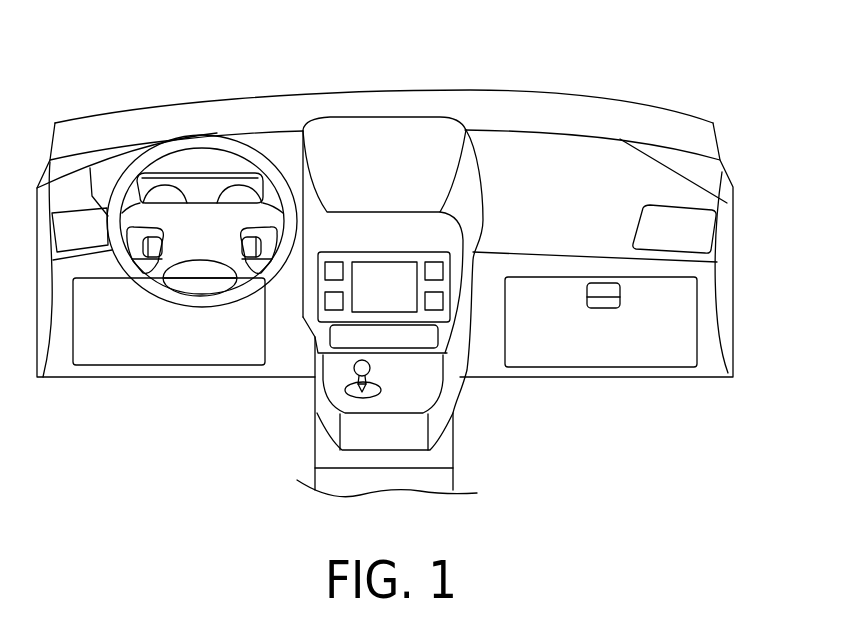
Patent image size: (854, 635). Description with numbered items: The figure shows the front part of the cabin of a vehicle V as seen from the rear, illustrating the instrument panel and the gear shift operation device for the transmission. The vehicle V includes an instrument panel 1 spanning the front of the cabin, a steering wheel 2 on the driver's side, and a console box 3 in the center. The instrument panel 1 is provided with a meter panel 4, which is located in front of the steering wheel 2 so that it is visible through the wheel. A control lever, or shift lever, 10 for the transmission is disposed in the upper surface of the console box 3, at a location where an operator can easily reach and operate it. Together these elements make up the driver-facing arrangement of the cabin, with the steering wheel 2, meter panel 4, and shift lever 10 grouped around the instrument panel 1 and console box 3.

The vehicle V is at (668, 40).
The instrument panel 1 is at (530, 152).
The steering wheel 2 is at (150, 287).
The console box 3 is at (413, 391).
The meter panel 4 is at (200, 187).
The control lever (shift lever) 10 is at (353, 373).